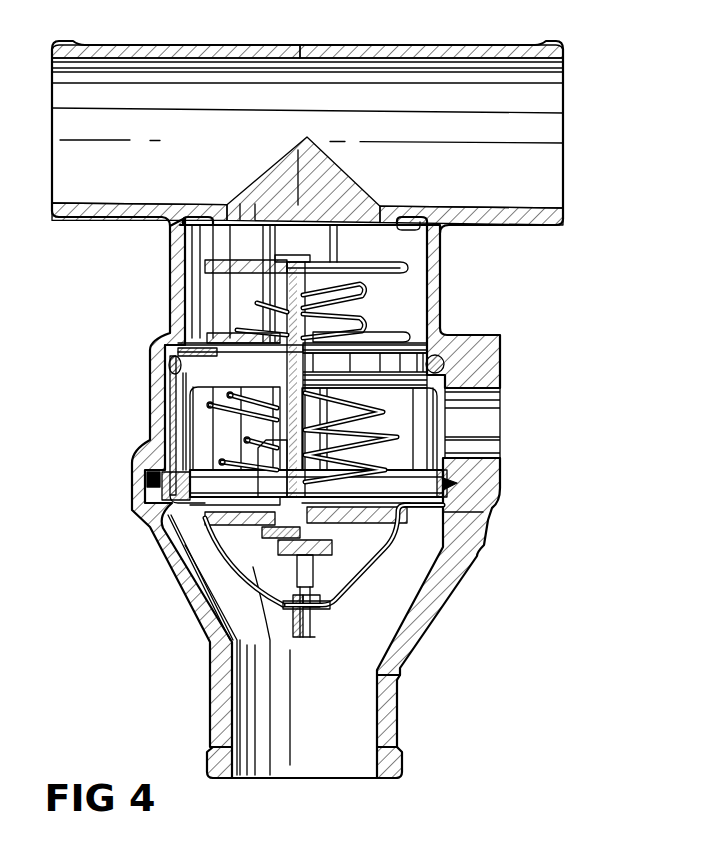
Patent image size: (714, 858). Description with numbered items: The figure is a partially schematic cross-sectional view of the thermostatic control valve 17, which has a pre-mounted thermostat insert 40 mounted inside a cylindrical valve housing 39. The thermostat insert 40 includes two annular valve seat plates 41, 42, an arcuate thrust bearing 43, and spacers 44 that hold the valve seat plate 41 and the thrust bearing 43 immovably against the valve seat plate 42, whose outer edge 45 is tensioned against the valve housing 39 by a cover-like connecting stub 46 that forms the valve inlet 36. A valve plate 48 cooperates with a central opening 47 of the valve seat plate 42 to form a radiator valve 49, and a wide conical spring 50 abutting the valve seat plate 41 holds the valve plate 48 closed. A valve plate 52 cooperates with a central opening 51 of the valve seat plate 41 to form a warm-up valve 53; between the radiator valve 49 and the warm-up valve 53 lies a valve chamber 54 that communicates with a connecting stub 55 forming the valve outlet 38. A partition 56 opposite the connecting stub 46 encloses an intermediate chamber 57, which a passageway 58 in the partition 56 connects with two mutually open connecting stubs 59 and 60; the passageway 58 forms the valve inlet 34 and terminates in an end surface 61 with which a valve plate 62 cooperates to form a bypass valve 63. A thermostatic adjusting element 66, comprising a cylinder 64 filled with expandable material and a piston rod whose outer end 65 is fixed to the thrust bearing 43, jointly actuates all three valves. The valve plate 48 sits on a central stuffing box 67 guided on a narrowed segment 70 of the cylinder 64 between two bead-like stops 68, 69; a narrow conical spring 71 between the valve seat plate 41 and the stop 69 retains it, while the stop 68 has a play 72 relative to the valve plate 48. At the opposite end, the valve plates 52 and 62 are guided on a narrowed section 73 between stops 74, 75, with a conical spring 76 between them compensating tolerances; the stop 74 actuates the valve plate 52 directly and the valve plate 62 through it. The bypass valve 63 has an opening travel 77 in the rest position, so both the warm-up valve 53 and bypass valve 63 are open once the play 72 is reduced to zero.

The thermostatic control valve 17 is at (105, 318).
The valve inlet 34 is at (285, 183).
The valve inlet 36 is at (330, 750).
The valve outlet 38 is at (490, 417).
The valve housing 39 is at (442, 292).
The thermostat insert 40 is at (423, 525).
The valve seat plate 41 is at (177, 343).
The valve seat plate 42 is at (132, 520).
The thrust bearing 43 is at (343, 603).
The spacers 44 is at (173, 412).
The outer edge 45 is at (390, 477).
The connecting stub 46 is at (403, 630).
The central opening 47 is at (225, 522).
The valve plate 48 is at (210, 530).
The radiator valve 49 is at (255, 575).
The wide conical spring 50 is at (232, 452).
The central opening 51 is at (252, 356).
The valve plate 52 is at (220, 333).
The warm-up valve 53 is at (388, 317).
The valve chamber 54 is at (407, 432).
The connecting stub 55 is at (485, 477).
The partition 56 is at (407, 214).
The intermediate chamber 57 is at (412, 260).
The passageway 58 is at (247, 197).
The connecting stub 59 is at (518, 226).
The connecting stub 60 is at (52, 233).
The end surface 61 is at (282, 237).
The valve plate 62 is at (390, 259).
The bypass valve 63 is at (222, 243).
The cylinder 64 is at (330, 410).
The outer end 65 is at (345, 597).
The thermostatic adjusting element 66 is at (372, 565).
The stuffing box 67 is at (280, 533).
The stop 68 is at (260, 558).
The stop 69 is at (273, 492).
The narrowed segment 70 is at (332, 548).
The narrow conical spring 71 is at (357, 458).
The travel or play 72 is at (240, 570).
The narrowed section 73 is at (337, 303).
The stop 74 is at (173, 360).
The stop 75 is at (335, 258).
The conical spring 76 is at (258, 302).
The opening travel or play 77 is at (393, 243).